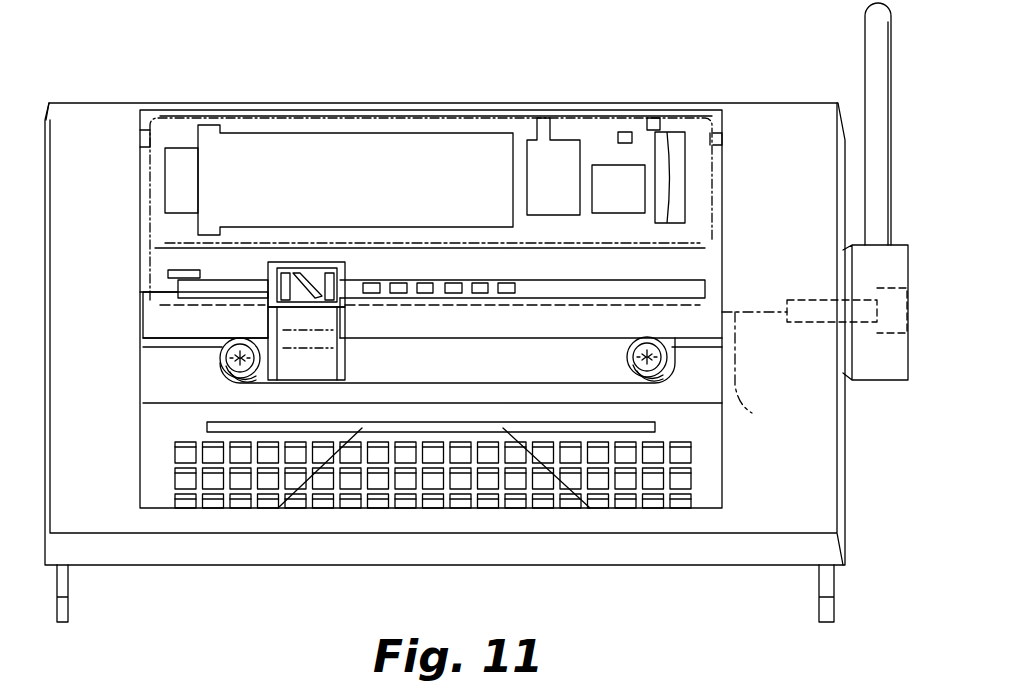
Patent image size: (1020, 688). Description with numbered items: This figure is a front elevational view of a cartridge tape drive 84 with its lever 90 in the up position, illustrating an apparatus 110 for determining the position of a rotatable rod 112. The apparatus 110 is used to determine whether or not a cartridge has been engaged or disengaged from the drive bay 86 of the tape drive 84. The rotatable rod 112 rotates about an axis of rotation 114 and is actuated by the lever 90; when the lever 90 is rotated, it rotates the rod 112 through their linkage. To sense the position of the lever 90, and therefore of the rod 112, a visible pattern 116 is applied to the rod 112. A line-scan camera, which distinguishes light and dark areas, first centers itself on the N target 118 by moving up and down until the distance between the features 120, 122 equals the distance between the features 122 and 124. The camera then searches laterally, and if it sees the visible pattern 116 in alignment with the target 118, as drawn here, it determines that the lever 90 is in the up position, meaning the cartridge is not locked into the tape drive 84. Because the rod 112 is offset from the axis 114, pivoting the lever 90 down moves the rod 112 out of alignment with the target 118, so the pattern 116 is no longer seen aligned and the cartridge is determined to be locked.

The cartridge tape drive 84 is at (110, 203).
The drive bay 86 is at (302, 153).
The lever 90 is at (865, 125).
The apparatus for determining the position of a rotatable rod 110 is at (410, 310).
The rotatable rod 112 is at (577, 290).
The axis of rotation 114 is at (814, 357).
The visible pattern 116 is at (452, 295).
The N target 118 is at (322, 273).
The feature 120 is at (289, 272).
The feature 122 is at (305, 275).
The feature 124 is at (330, 272).